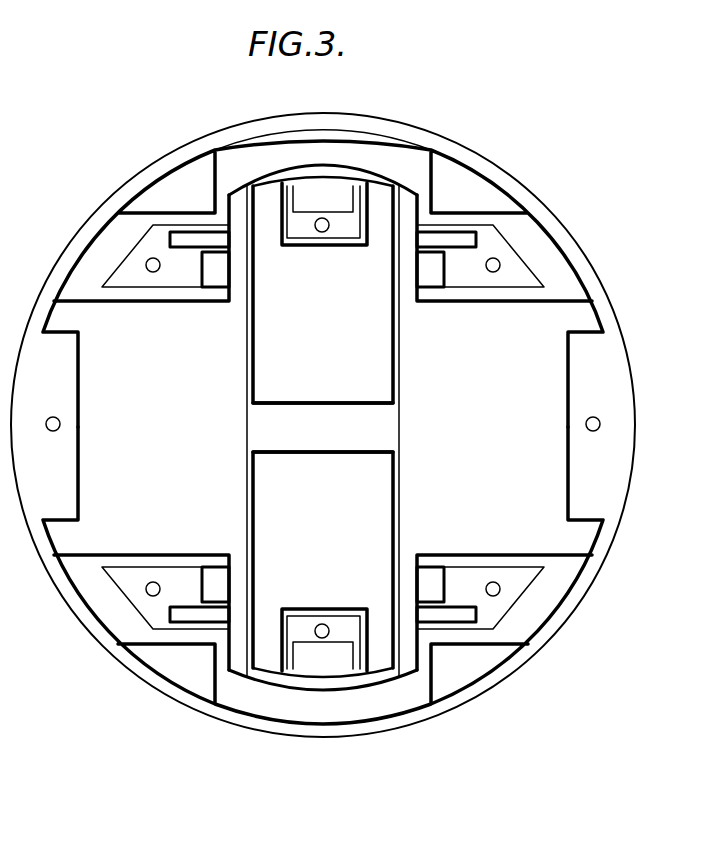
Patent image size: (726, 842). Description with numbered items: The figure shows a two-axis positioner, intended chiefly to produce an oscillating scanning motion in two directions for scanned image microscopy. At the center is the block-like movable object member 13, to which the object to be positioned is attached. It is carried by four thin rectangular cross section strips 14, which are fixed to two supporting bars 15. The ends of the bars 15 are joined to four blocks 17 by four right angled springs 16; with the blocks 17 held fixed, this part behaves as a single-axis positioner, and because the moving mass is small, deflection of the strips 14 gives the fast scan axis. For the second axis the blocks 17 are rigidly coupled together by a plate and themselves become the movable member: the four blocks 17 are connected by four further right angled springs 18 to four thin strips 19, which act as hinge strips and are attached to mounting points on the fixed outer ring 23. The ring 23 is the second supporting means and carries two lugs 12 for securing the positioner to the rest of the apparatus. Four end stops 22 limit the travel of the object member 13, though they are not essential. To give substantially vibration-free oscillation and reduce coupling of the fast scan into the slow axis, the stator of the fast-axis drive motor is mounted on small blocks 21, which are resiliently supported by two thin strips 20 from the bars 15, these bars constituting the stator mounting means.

The lug 12 is at (605, 490).
The movable object member 13 is at (272, 424).
The thin rectangular cross section strip 14 is at (400, 380).
The supporting bar 15 is at (380, 677).
The right angled spring 16 is at (445, 640).
The block 17 is at (128, 251).
The right angled spring 18 is at (418, 268).
The thin strip 19 is at (524, 300).
The thin strip 20 is at (292, 197).
The small block 21 is at (309, 637).
The end stop 22 is at (183, 685).
The fixed outer ring 23 is at (255, 124).